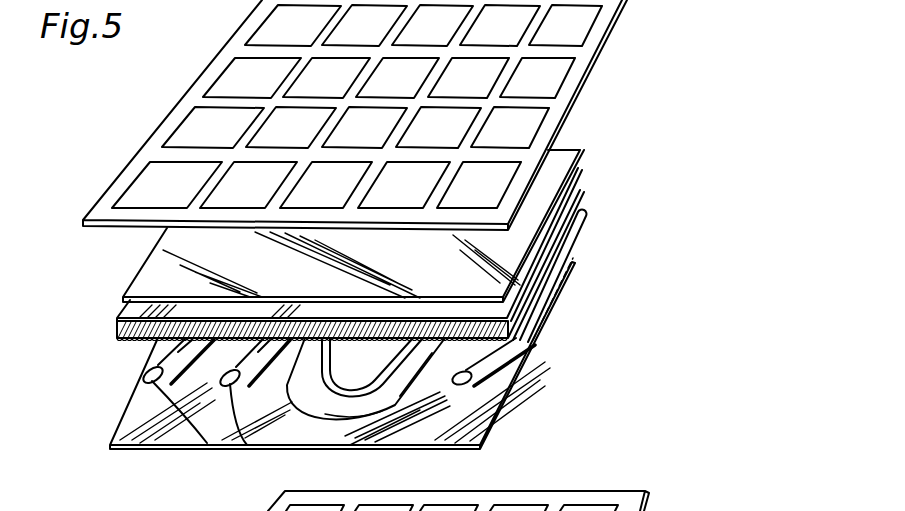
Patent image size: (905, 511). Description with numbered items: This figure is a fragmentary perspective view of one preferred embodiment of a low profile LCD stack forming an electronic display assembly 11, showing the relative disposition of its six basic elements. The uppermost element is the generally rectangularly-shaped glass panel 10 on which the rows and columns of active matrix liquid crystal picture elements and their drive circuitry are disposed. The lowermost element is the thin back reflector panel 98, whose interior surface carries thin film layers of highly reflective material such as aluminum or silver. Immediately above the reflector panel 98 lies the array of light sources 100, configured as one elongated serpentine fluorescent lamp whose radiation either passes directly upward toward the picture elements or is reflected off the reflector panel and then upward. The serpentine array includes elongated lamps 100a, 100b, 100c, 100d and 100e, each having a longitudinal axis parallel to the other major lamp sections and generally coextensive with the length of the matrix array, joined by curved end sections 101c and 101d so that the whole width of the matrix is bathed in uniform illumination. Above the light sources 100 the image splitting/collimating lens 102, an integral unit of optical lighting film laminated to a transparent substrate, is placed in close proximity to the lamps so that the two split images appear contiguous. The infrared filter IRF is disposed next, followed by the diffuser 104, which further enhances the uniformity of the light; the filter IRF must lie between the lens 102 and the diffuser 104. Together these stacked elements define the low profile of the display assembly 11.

The electronic display assembly 11 is at (82, 131).
The glass panel 10 is at (598, 43).
The diffuser 104 is at (563, 158).
The infrared filter IRF is at (128, 311).
The image splitting/collimating lens 102 is at (578, 192).
The curved end section 101d is at (573, 232).
The array of light sources 100 is at (546, 324).
The back reflector panel 98 is at (488, 444).
The elongated lamp 100a is at (148, 370).
The elongated lamp 100b is at (207, 443).
The elongated lamp 100c is at (247, 445).
The curved end section 101c is at (340, 412).
The elongated lamp 100d is at (390, 384).
The elongated lamp 100e is at (526, 378).